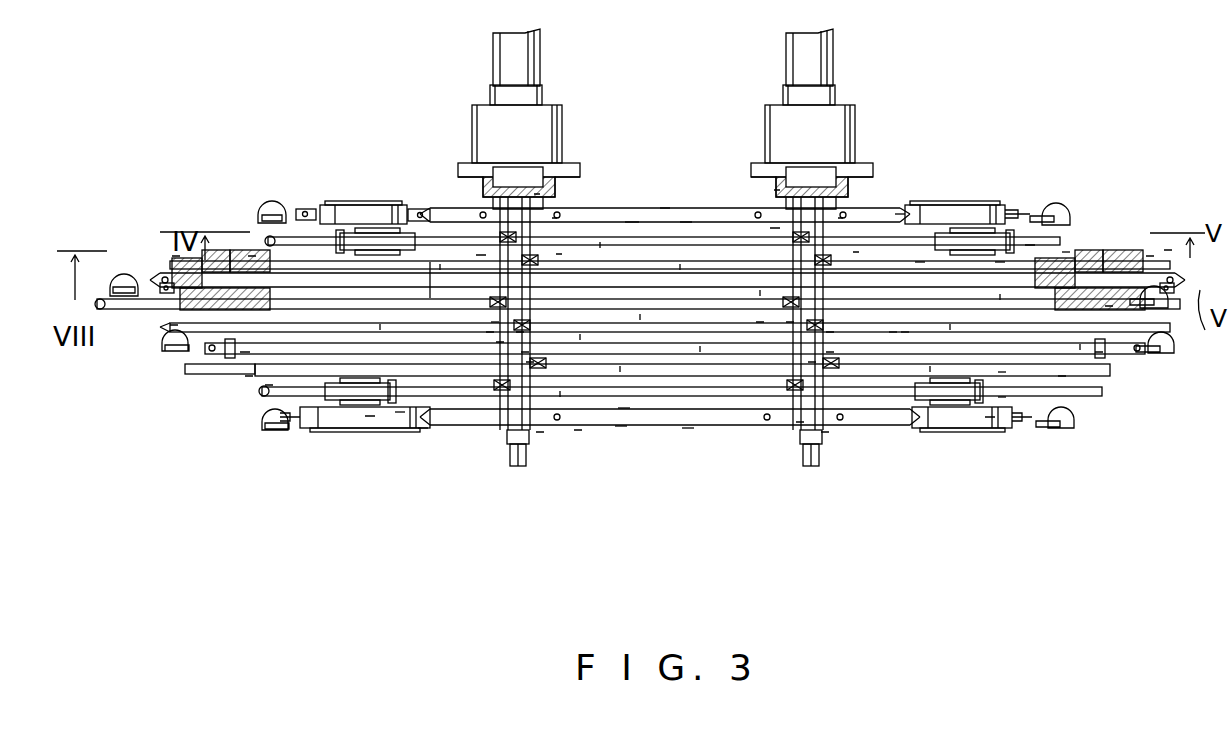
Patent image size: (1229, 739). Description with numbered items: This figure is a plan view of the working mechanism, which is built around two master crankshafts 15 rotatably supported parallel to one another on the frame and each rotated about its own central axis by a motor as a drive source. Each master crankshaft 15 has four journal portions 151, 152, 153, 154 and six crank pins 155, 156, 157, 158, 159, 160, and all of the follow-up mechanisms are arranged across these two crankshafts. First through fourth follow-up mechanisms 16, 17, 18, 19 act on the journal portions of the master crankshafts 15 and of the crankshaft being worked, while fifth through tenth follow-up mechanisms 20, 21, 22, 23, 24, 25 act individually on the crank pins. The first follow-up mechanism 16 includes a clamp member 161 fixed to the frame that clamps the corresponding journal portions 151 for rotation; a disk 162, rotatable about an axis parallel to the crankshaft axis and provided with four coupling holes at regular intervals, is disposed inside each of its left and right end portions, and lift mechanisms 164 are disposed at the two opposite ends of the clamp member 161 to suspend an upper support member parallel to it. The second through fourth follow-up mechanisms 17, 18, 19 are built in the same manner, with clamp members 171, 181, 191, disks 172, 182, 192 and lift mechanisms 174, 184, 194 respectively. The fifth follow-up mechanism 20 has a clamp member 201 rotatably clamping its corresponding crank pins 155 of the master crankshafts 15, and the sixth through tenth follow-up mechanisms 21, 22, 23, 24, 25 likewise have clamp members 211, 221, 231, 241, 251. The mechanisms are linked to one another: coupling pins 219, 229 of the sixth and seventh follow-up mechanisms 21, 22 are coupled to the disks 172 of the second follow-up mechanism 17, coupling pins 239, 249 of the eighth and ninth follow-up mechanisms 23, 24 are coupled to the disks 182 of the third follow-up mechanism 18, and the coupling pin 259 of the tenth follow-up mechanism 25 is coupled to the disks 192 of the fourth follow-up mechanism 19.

The master crankshaft 15 is at (530, 362).
The first follow-up mechanism 16 is at (668, 198).
The second follow-up mechanism 17 is at (440, 278).
The third follow-up mechanism 18 is at (624, 438).
The fourth follow-up mechanism 19 is at (425, 440).
The fifth follow-up mechanism 20 is at (635, 203).
The sixth follow-up mechanism 21 is at (689, 212).
The seventh follow-up mechanism 22 is at (920, 262).
The eighth follow-up mechanism 23 is at (905, 332).
The ninth follow-up mechanism 24 is at (893, 332).
The tenth follow-up mechanism 25 is at (691, 440).
The journal portion 151 is at (535, 195).
The journal portion 152 is at (560, 252).
The journal portion 153 is at (520, 332).
The journal portion 154 is at (525, 352).
The crank pin 155 is at (554, 216).
The crank pin 156 is at (478, 250).
The crank pin 157 is at (490, 332).
The crank pin 158 is at (500, 342).
The crank pin 159 is at (578, 430).
The crank pin 160 is at (540, 432).
The clamp member 161 is at (440, 213).
The disk 162 is at (350, 218).
The lift mechanism 164 is at (270, 203).
The clamp member 171 is at (304, 212).
The disk 172 is at (1150, 256).
The lift mechanism 174 is at (120, 270).
The clamp member 181 is at (400, 412).
The disk 182 is at (248, 376).
The lift mechanism 184 is at (166, 358).
The clamp member 191 is at (495, 322).
The disk 192 is at (370, 416).
The lift mechanism 194 is at (274, 434).
The clamp member 201 is at (900, 214).
The clamp member 211 is at (1066, 252).
The coupling pin 219 is at (1168, 250).
The clamp member 221 is at (1000, 262).
The coupling pin 229 is at (175, 325).
The clamp member 231 is at (1002, 372).
The coupling pin 239 is at (1030, 245).
The clamp member 241 is at (1002, 397).
The coupling pin 249 is at (270, 385).
The clamp member 251 is at (630, 417).
The coupling pin 259 is at (350, 412).